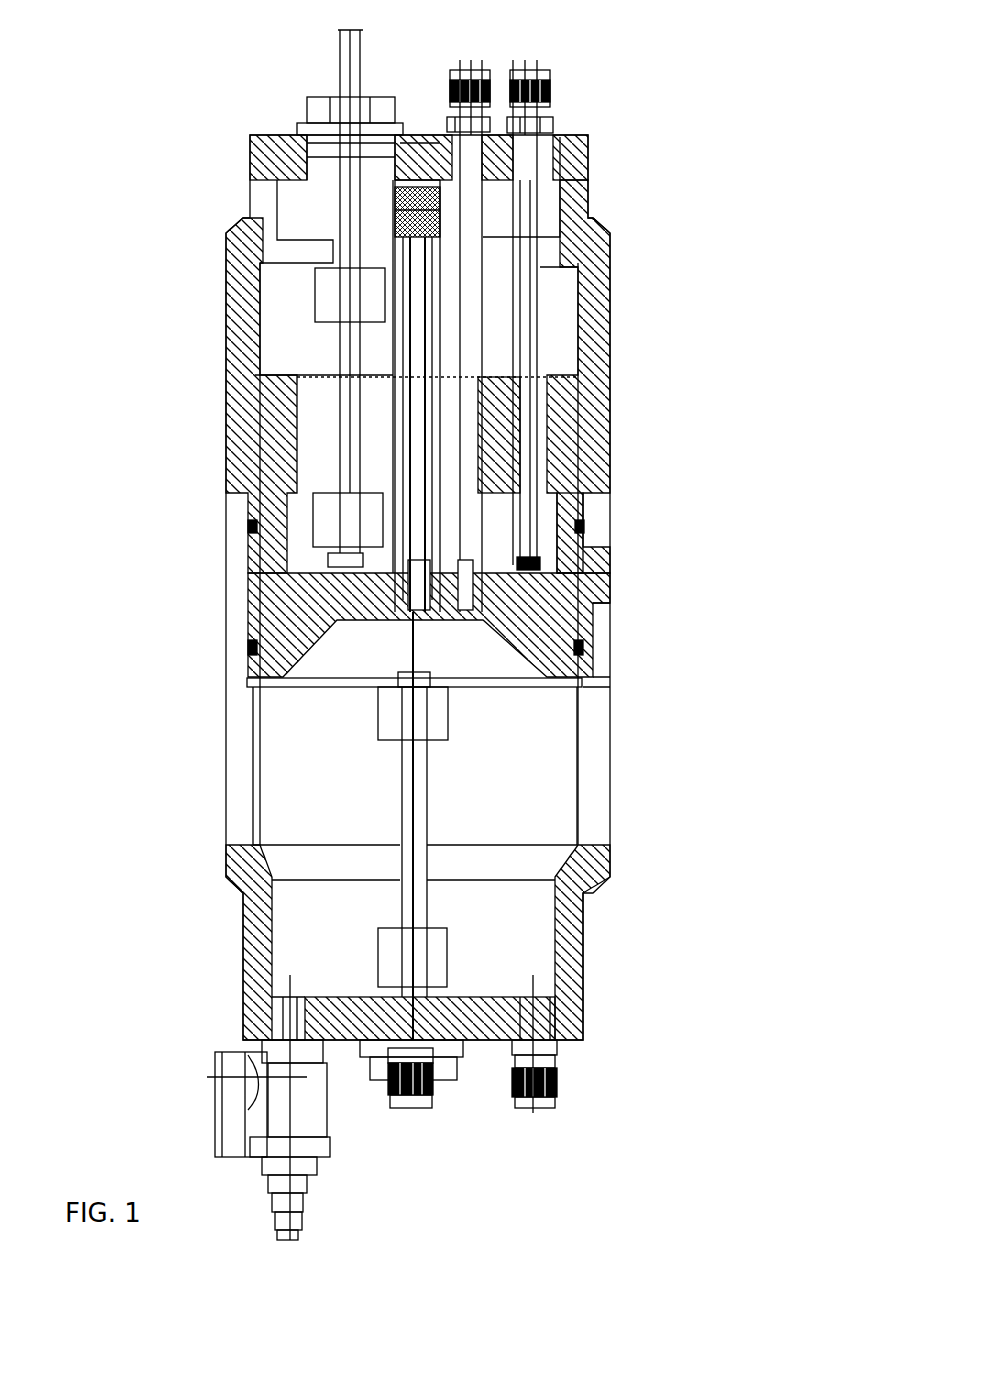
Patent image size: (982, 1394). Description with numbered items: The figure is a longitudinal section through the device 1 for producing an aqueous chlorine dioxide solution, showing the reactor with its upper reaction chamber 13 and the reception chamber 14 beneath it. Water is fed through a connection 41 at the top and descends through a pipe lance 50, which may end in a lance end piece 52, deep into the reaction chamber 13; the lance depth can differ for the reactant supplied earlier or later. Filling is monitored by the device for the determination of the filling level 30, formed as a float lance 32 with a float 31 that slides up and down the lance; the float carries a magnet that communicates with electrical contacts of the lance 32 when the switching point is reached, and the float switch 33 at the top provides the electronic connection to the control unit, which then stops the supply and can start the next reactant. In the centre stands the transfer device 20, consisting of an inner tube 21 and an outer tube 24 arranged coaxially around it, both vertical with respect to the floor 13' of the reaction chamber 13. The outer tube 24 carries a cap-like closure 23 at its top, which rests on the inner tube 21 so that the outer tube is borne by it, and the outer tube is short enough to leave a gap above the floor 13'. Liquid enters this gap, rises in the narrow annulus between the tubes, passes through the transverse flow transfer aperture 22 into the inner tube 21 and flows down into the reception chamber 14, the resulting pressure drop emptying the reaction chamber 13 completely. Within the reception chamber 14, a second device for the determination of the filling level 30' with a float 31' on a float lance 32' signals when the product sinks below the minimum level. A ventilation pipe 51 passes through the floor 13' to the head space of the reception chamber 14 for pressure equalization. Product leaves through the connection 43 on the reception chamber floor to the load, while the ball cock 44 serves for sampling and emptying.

The device 1 is at (226, 256).
The reaction chamber 13 is at (477, 587).
The floor of the reaction chamber 13' is at (693, 647).
The reception chamber 14 is at (552, 788).
The transfer device 20 is at (437, 527).
The inner tube 21 is at (436, 298).
The flow transfer aperture 22 is at (395, 222).
The closure 23 is at (398, 185).
The outer tube 24 is at (440, 212).
The device for the determination of the filling level 30 is at (262, 303).
The second device for the determination of the filling level 30' is at (260, 743).
The float 31 is at (248, 530).
The float 31' is at (292, 959).
The float lance 32 is at (235, 291).
The float lance 32' is at (267, 842).
The float switch 33 is at (318, 108).
The connection 41 is at (556, 85).
The connection 43 is at (558, 1073).
The ball cock 44 is at (300, 1110).
The pipe lance 50 is at (578, 378).
The ventilation pipe 51 is at (588, 608).
The lance end piece 52 is at (585, 552).